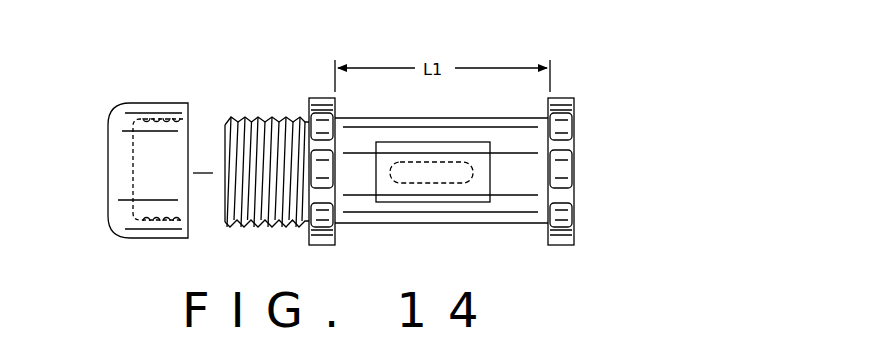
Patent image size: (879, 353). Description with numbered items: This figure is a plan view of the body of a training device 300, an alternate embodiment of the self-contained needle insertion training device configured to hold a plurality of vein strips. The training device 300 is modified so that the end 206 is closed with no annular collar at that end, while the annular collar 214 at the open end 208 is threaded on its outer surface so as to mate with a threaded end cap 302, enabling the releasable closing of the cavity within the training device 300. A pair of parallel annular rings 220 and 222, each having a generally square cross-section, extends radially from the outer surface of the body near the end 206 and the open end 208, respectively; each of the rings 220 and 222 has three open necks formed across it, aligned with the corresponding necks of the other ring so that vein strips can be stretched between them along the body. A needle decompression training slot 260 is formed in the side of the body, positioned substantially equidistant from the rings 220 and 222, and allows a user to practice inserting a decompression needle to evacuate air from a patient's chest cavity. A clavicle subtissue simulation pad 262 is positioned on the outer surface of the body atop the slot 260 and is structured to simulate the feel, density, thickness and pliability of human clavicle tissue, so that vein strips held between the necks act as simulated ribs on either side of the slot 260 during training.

The end 206 is at (514, 145).
The open end 208 is at (260, 156).
The annular collar 214 is at (263, 218).
The annular ring 220 is at (565, 176).
The annular ring 222 is at (327, 248).
The needle decompression training slot 260 is at (443, 178).
The clavicle subtissue simulation pad 262 is at (477, 152).
The training device 300 is at (448, 41).
The threaded end cap 302 is at (130, 189).